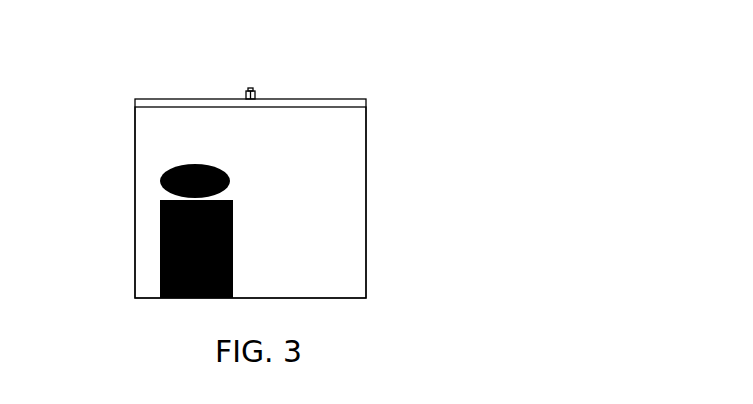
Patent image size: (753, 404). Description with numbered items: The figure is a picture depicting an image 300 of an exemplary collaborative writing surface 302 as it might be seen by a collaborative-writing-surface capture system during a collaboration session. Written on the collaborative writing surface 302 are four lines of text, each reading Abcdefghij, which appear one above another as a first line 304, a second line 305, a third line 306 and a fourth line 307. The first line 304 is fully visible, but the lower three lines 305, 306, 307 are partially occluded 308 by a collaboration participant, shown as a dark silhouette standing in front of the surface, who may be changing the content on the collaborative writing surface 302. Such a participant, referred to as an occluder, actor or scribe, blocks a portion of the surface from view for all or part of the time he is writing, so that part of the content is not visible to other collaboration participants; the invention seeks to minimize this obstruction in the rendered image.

The image 300 is at (131, 101).
The collaborative writing surface 302 is at (143, 146).
The first line of text 304 is at (278, 140).
The second line of text 305 is at (298, 175).
The third line of text 306 is at (277, 207).
The fourth line of text 307 is at (295, 242).
The occlusion 308 is at (158, 255).